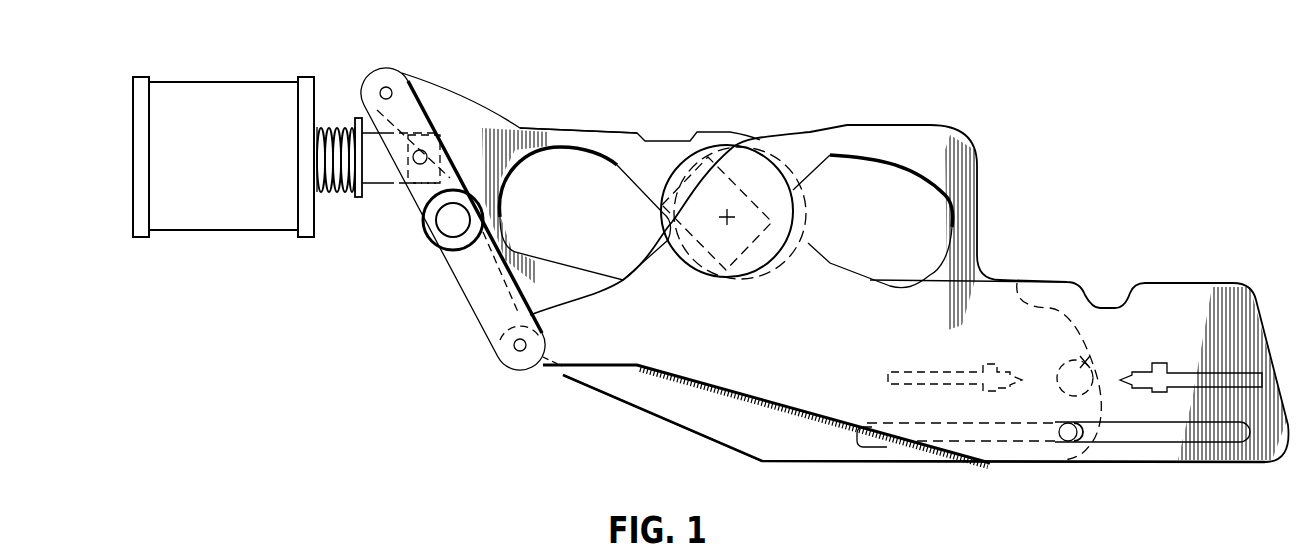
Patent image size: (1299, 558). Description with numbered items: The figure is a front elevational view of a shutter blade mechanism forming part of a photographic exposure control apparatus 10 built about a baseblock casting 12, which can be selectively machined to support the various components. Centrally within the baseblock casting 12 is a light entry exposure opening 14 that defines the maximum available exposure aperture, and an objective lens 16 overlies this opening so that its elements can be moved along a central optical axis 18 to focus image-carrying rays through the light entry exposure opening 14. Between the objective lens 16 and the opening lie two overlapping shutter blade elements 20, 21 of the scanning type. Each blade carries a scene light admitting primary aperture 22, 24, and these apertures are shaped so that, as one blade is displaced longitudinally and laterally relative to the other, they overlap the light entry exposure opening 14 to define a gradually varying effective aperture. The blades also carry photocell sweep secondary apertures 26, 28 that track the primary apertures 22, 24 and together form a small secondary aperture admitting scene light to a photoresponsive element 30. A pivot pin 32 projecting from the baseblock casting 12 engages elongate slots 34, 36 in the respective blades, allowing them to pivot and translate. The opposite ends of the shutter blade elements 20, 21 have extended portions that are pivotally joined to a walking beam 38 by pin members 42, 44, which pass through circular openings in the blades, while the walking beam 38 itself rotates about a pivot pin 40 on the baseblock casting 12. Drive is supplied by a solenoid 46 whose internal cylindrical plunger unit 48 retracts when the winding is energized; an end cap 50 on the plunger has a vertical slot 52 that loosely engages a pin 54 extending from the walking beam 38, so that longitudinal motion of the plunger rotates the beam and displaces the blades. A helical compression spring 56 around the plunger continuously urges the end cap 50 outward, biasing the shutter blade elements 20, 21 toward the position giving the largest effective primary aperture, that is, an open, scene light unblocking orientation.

The photographic exposure control apparatus 10 is at (920, 103).
The baseblock casting 12 is at (1047, 193).
The light entry exposure opening 14 is at (762, 258).
The objective lens 16 is at (760, 143).
The central optical axis 18 is at (725, 250).
The shutter blade element 20 is at (527, 135).
The shutter blade element 21 is at (672, 378).
The scene light admitting primary aperture 22 is at (557, 263).
The scene light admitting primary aperture 24 is at (937, 263).
The photocell sweep secondary aperture 26 is at (968, 387).
The photocell sweep secondary aperture 28 is at (1222, 380).
The photoresponsive element 30 is at (1067, 385).
The pivot pin 32 is at (1060, 440).
The elongate slot 34 is at (885, 448).
The elongate slot 36 is at (1143, 442).
The walking beam 38 is at (453, 280).
The pivot pin 40 is at (457, 215).
The pin member 42 is at (392, 88).
The pin member 44 is at (517, 348).
The solenoid 46 is at (198, 80).
The plunger unit 48 is at (373, 128).
The end cap 50 is at (428, 150).
The vertical slot 52 is at (413, 197).
The pin 54 is at (425, 153).
The helical compression spring 56 is at (327, 195).